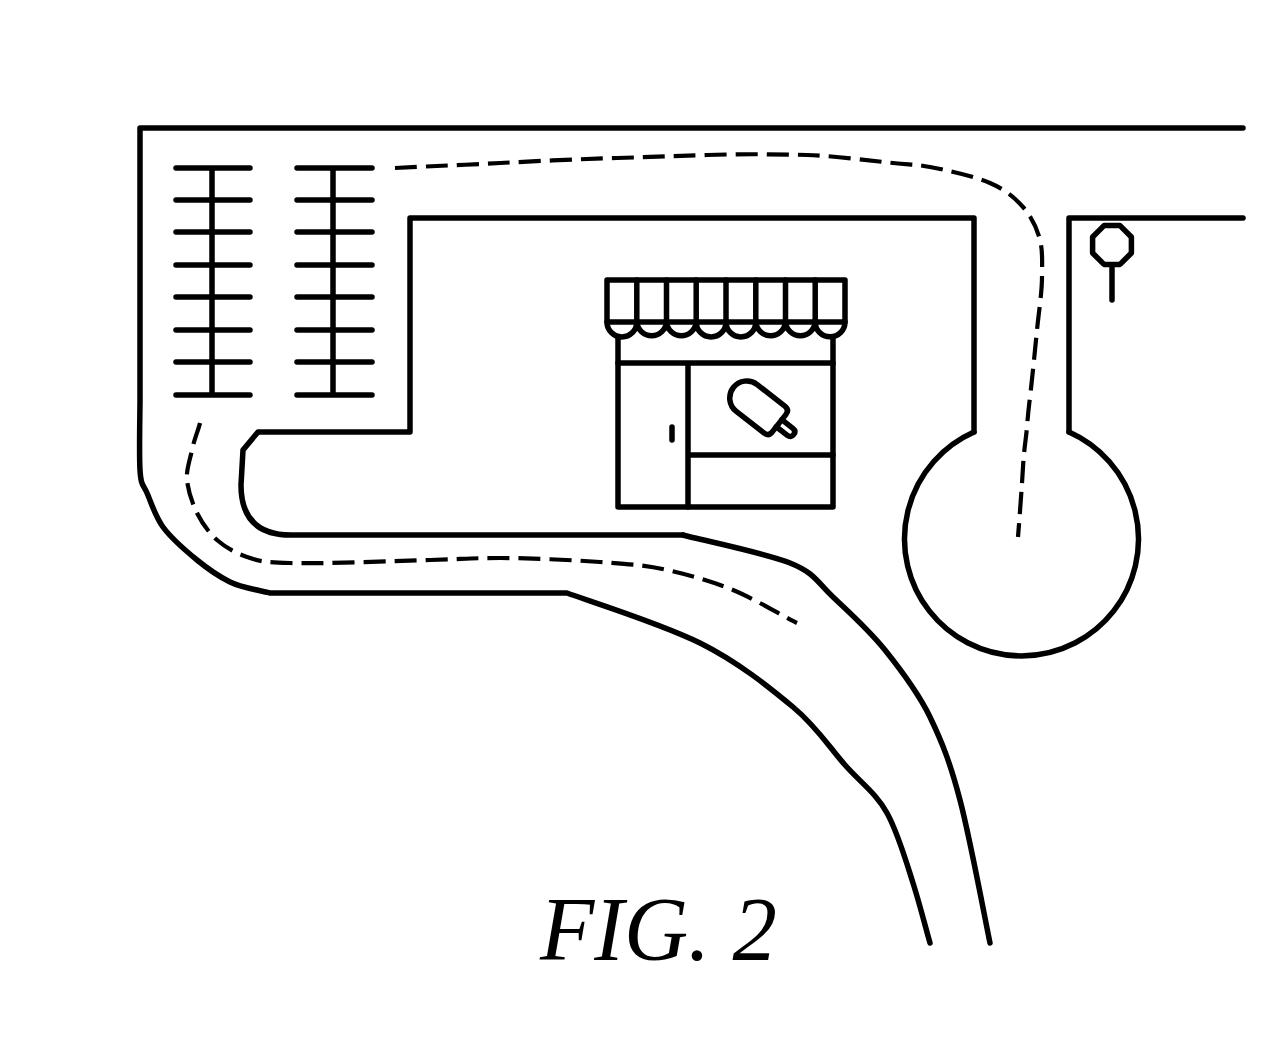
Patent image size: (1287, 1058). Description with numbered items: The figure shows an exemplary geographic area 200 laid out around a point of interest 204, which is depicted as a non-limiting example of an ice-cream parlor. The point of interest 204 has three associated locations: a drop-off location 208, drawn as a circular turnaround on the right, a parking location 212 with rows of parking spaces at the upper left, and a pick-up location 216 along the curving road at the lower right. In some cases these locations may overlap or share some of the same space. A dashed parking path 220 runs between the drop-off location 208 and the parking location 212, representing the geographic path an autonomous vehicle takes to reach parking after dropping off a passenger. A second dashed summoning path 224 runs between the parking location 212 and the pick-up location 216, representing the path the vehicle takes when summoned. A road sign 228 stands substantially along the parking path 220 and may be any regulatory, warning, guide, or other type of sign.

The geographic area 200 is at (462, 750).
The point of interest 204 is at (463, 254).
The drop-off location 208 is at (1022, 560).
The parking location 212 is at (260, 125).
The pick-up location 216 is at (608, 719).
The parking path 220 is at (617, 157).
The summoning path 224 is at (316, 629).
The road sign 228 is at (1128, 275).